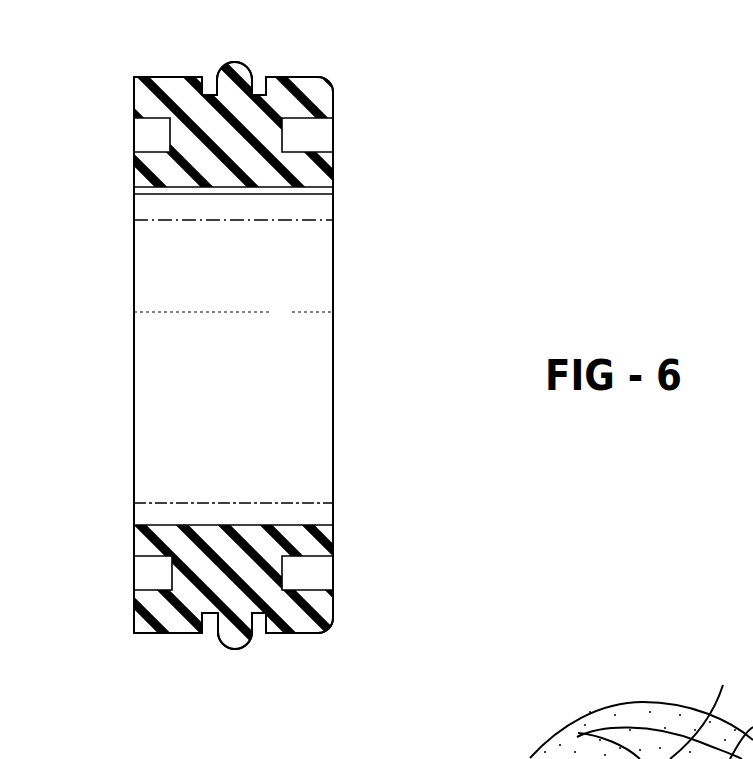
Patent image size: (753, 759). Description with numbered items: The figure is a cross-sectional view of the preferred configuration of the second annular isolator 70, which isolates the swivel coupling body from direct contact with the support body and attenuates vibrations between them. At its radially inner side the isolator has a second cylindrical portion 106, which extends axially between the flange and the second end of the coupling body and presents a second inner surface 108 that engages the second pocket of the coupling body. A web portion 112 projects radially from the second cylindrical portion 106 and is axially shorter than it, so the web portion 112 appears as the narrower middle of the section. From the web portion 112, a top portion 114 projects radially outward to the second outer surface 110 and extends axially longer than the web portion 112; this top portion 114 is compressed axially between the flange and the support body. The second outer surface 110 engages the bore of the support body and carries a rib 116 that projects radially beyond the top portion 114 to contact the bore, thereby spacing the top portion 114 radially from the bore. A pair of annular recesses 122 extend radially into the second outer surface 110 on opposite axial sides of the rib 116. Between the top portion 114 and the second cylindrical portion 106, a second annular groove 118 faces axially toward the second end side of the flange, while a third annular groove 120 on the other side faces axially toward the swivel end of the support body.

The second annular isolator 70 is at (356, 60).
The second cylindrical portion 106 is at (143, 168).
The second inner surface 108 is at (302, 186).
The second outer surface 110 is at (305, 73).
The web portion 112 is at (225, 128).
The top portion 114 is at (150, 100).
The rib 116 is at (232, 62).
The second annular groove 118 is at (160, 124).
The third annular groove 120 is at (284, 126).
The annular recesses 122 is at (205, 95).